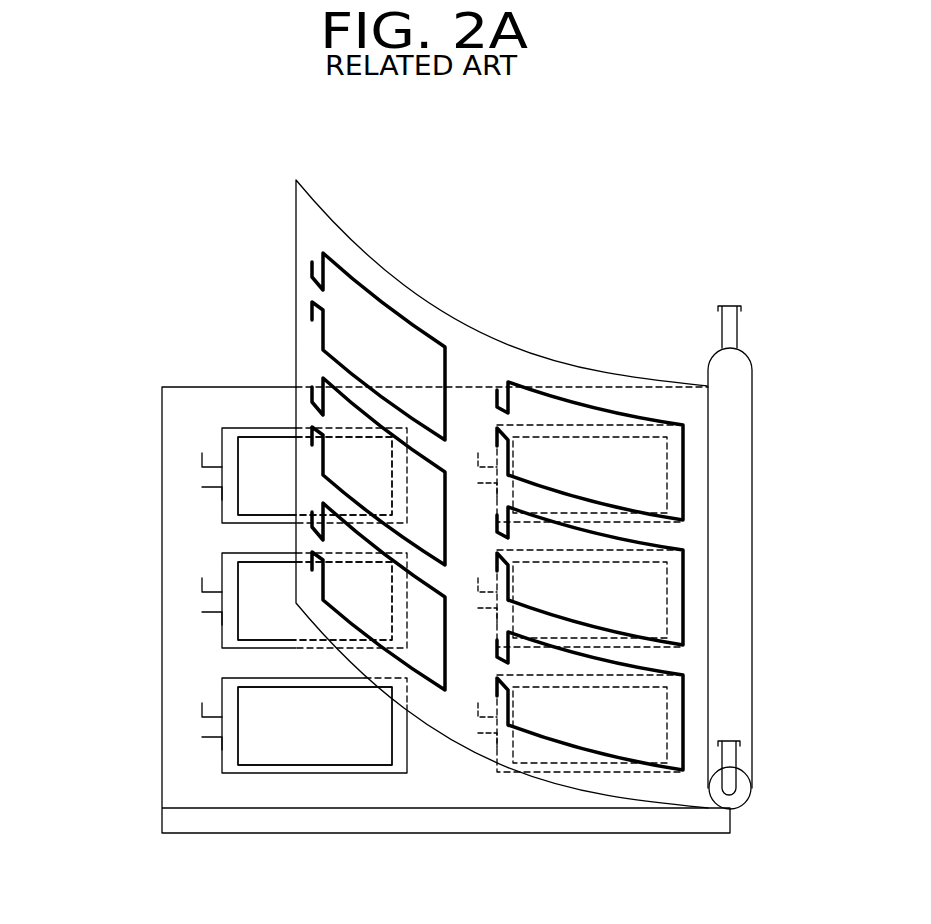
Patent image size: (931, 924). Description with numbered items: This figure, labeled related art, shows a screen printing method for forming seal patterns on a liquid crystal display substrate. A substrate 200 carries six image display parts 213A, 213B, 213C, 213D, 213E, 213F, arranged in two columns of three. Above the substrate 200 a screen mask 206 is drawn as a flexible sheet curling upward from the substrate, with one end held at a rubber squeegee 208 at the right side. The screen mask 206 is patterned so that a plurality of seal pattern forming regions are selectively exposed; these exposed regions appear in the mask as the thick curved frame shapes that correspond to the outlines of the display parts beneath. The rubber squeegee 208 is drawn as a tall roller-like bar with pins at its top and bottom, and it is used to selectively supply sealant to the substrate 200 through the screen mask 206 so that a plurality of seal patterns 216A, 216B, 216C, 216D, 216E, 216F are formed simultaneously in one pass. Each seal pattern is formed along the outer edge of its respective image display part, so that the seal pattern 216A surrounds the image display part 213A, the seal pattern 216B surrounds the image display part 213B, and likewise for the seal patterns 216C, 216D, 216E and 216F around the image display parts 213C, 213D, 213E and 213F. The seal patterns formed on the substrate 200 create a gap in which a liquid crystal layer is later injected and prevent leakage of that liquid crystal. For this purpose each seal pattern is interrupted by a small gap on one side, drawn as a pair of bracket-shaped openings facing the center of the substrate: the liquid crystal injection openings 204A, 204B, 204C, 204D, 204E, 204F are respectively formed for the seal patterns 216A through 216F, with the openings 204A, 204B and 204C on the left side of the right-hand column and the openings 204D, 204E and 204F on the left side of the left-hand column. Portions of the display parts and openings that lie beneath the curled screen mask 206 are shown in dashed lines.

The substrate 200 is at (712, 824).
The screen mask 206 is at (337, 219).
The rubber squeegee 208 is at (737, 376).
The liquid crystal injection opening 204A is at (472, 475).
The liquid crystal injection opening 204B is at (472, 601).
The liquid crystal injection opening 204C is at (471, 724).
The liquid crystal injection opening 204D is at (200, 475).
The liquid crystal injection opening 204E is at (200, 600).
The liquid crystal injection opening 204F is at (200, 725).
The image display part 213A is at (636, 487).
The image display part 213B is at (636, 612).
The image display part 213C is at (636, 737).
The image display part 213D is at (290, 487).
The image display part 213E is at (290, 612).
The image display part 213F is at (290, 737).
The seal pattern 216A is at (577, 426).
The seal pattern 216B is at (577, 551).
The seal pattern 216C is at (577, 676).
The seal pattern 216D is at (222, 436).
The seal pattern 216E is at (222, 561).
The seal pattern 216F is at (222, 686).